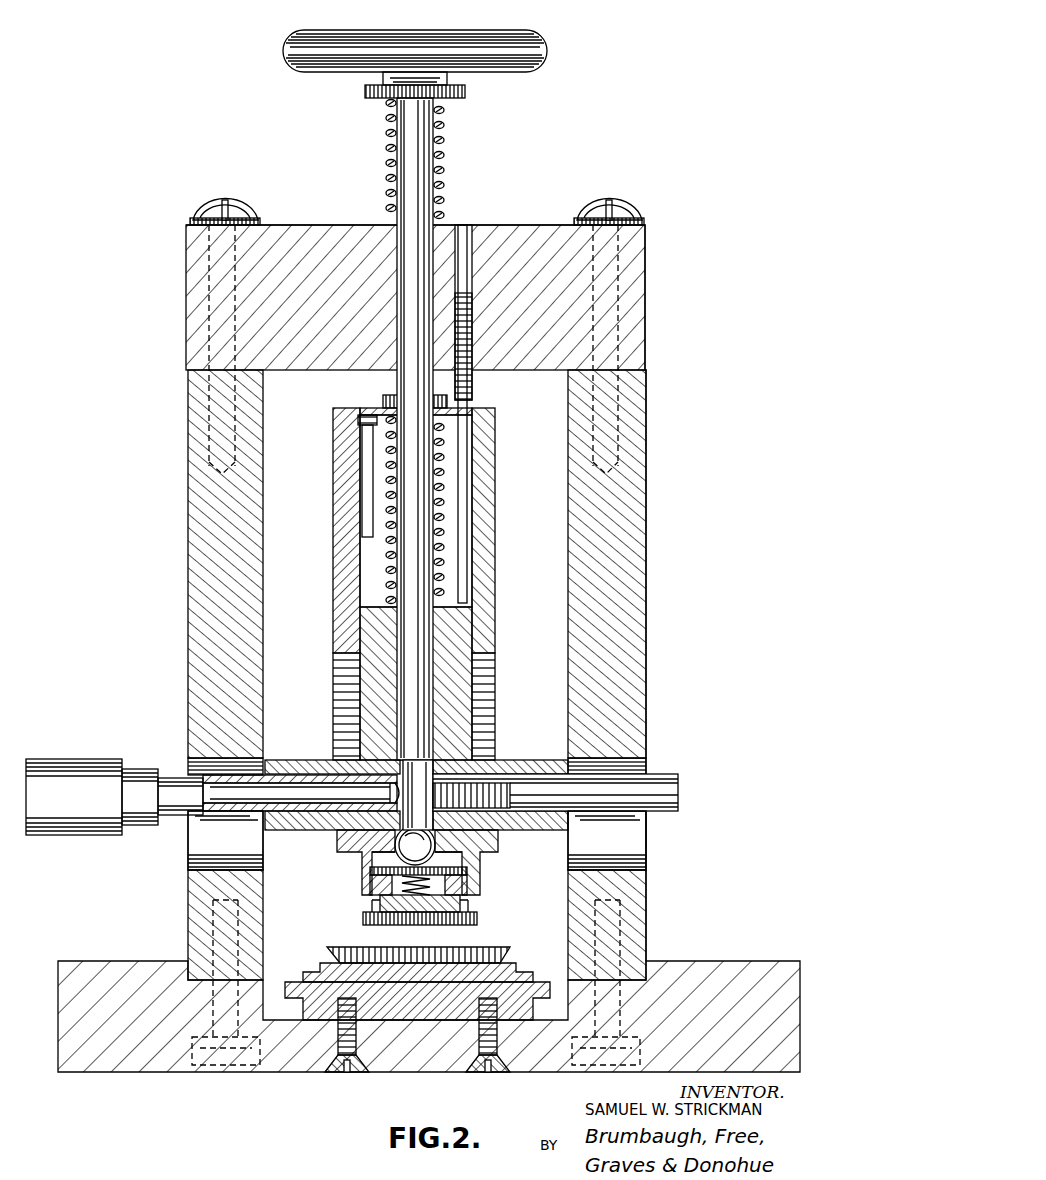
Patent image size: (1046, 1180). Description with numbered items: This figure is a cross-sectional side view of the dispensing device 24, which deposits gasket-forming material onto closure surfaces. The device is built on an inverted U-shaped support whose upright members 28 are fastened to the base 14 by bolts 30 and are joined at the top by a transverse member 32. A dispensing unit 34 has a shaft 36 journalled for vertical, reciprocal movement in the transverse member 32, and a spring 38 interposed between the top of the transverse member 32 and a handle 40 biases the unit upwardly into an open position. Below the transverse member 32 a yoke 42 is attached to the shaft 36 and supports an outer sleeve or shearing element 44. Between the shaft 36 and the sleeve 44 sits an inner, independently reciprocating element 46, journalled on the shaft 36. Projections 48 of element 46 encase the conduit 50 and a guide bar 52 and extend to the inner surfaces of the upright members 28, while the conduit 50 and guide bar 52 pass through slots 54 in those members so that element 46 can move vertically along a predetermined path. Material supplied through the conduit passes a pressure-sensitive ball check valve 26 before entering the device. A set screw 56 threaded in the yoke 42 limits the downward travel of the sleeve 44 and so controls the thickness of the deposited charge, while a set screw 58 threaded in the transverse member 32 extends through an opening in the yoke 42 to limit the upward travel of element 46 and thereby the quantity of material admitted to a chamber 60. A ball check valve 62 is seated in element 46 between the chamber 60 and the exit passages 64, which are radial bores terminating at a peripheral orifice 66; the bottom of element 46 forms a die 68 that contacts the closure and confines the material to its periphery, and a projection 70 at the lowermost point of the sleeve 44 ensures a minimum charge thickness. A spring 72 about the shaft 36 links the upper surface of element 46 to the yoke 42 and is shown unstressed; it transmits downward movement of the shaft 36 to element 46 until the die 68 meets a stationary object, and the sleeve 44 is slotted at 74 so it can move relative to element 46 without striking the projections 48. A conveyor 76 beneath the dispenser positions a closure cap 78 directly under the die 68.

The base 14 is at (720, 960).
The dispensing device 24 is at (672, 372).
The ball check valve 26 is at (80, 748).
The upright members 28 is at (196, 556).
The bolts 30 is at (218, 1066).
The transverse member 32 is at (548, 225).
The dispensing unit 34 is at (277, 69).
The shaft 36 is at (415, 222).
The spring 38 is at (440, 172).
The handle 40 is at (547, 46).
The yoke 42 is at (478, 408).
The outer sleeve 44 is at (495, 497).
The inner reciprocating element 46 is at (455, 640).
The projections 48 is at (531, 748).
The conduit 50 is at (266, 794).
The guide bar 52 is at (676, 777).
The slots 54 is at (190, 857).
The set screw 56 is at (365, 472).
The set screw 58 is at (466, 460).
The chamber 60 is at (422, 778).
The ball check valve 62 is at (405, 853).
The exit passages 64 is at (372, 868).
The peripheral orifice 66 is at (402, 884).
The die 68 is at (477, 918).
The projection 70 is at (472, 855).
The spring 72 is at (437, 540).
The slots 74 is at (495, 672).
The conveyor 76 is at (300, 976).
The closure cap 78 is at (508, 950).